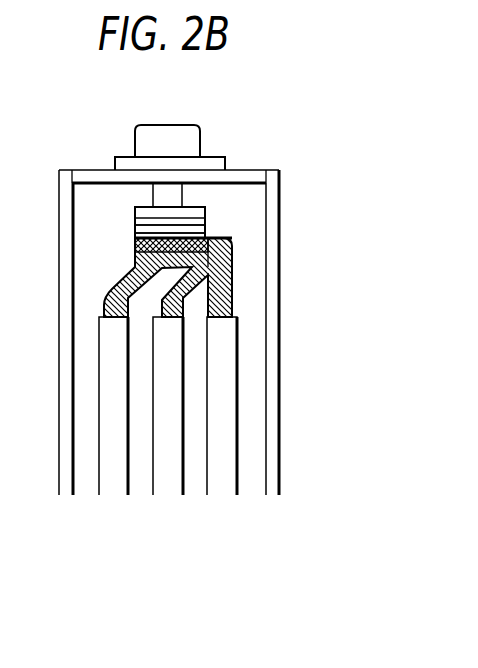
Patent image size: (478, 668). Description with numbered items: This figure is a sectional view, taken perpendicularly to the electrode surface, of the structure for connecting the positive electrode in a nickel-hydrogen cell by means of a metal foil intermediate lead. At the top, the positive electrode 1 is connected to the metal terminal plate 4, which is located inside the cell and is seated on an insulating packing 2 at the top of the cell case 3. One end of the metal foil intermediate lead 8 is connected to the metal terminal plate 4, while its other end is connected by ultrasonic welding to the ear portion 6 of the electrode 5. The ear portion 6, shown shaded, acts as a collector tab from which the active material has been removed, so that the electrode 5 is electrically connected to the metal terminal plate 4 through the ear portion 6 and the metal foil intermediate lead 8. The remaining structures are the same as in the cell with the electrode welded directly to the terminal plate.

The positive electrode 1 is at (182, 133).
The insulating packing 2 is at (214, 155).
The cell case 3 is at (279, 228).
The metal terminal plate 4 is at (135, 210).
The electrode 5 is at (117, 488).
The ear portion 6 is at (233, 297).
The metal foil intermediate lead 8 is at (136, 222).